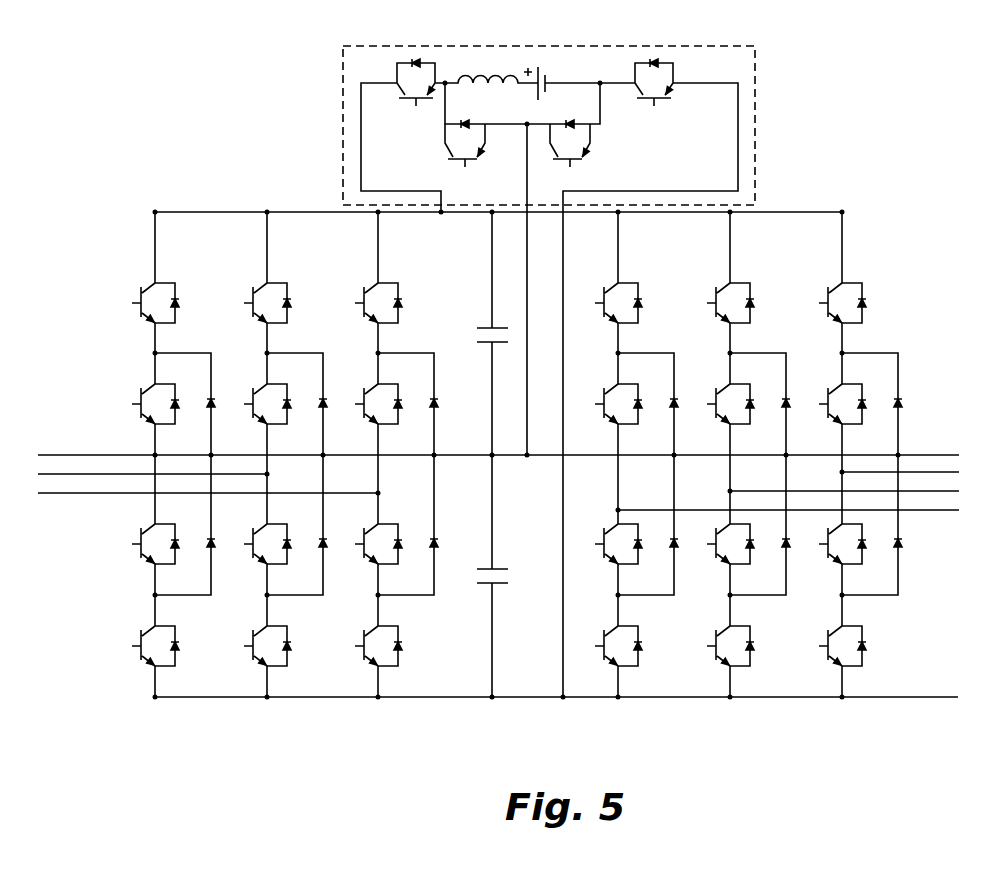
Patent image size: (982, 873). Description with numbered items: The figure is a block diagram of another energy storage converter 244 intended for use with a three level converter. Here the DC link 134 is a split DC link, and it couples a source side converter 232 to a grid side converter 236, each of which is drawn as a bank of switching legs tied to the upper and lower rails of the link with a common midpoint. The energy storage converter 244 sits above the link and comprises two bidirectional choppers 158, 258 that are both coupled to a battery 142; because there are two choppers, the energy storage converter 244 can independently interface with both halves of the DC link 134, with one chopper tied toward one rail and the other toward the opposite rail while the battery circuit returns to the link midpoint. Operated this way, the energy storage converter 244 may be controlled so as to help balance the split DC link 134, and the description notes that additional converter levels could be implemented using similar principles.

The DC link 134 is at (491, 700).
The grid side converter 236 is at (262, 700).
The source side converter 232 is at (863, 716).
The energy storage converter 244 is at (487, 352).
The bidirectional chopper 158 is at (378, 70).
The battery 142 is at (543, 64).
The bidirectional chopper 258 is at (667, 52).